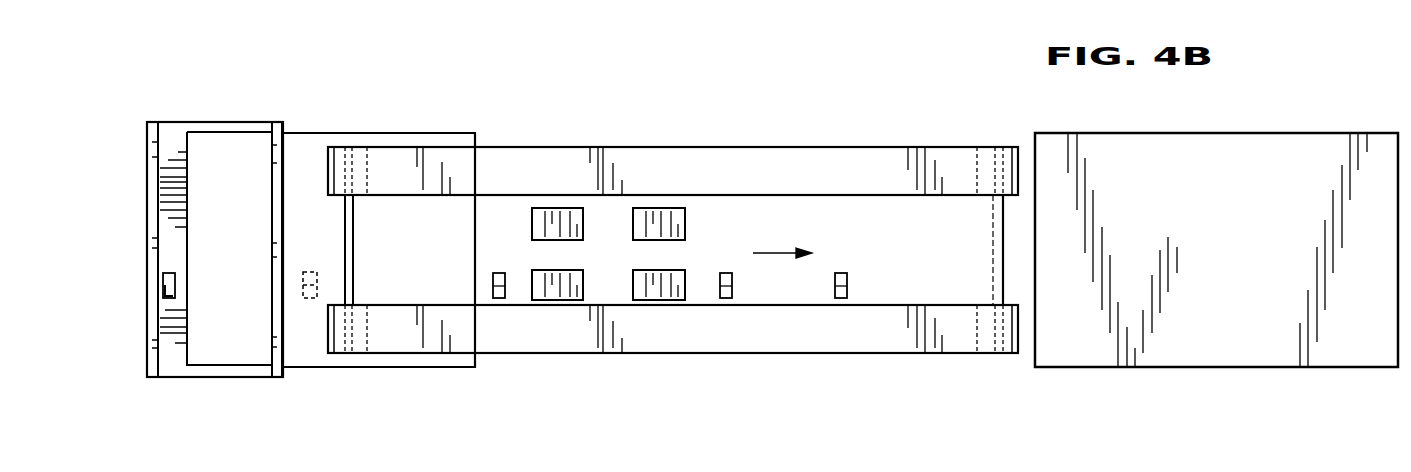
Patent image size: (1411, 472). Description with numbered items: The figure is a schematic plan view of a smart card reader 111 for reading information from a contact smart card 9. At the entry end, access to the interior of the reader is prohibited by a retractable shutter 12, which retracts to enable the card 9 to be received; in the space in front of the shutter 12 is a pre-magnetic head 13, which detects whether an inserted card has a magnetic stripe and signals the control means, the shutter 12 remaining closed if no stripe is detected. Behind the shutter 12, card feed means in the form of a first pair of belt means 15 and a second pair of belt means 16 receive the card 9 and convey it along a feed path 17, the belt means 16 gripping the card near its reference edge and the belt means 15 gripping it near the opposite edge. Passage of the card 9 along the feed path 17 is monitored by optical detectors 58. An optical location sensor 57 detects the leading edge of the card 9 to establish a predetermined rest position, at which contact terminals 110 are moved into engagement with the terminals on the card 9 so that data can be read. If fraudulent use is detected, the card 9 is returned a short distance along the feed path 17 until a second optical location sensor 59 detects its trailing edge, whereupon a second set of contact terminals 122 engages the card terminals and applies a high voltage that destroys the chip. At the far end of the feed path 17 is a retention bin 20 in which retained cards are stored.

The contact smart card 9 is at (313, 133).
The retractable shutter 12 is at (268, 198).
The pre-magnetic head 13 is at (163, 285).
The first pair of belt means 15 is at (878, 353).
The second pair of belt means 16 is at (868, 148).
The feed path 17 is at (781, 250).
The retention bin 20 is at (1196, 354).
The optical location sensor 57 is at (733, 287).
The optical detectors 58 is at (848, 282).
The second optical location sensor 59 is at (493, 272).
The contact terminals 110 is at (680, 208).
The smart card reader 111 is at (968, 385).
The second set of contact terminals 122 is at (568, 208).